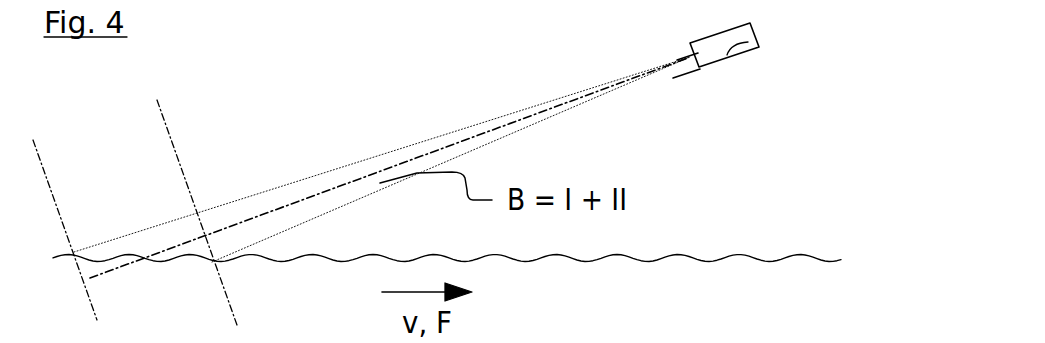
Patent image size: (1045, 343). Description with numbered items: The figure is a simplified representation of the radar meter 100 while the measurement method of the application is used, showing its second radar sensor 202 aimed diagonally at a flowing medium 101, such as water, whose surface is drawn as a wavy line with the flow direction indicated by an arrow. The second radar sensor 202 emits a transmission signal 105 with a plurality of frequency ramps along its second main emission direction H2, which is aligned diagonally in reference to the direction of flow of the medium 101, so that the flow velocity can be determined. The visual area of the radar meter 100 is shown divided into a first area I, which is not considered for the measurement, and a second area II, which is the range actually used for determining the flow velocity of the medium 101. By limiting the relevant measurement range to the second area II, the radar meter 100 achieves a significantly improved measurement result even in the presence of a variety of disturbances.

The radar meter 100 is at (752, 42).
The medium 101 is at (673, 299).
The transmission signal 105 is at (434, 141).
The second radar sensor 202 is at (680, 53).
The second main emission direction H2 is at (135, 212).
The first area I is at (333, 182).
The second area II is at (170, 235).